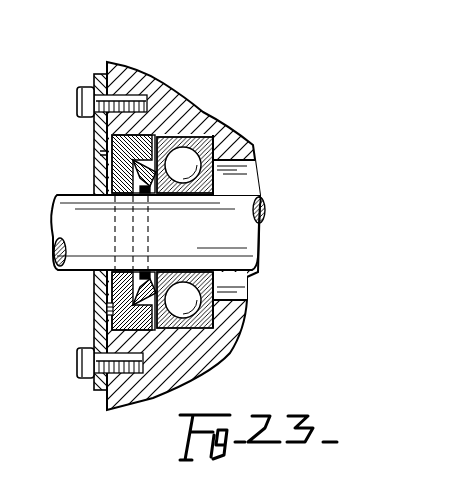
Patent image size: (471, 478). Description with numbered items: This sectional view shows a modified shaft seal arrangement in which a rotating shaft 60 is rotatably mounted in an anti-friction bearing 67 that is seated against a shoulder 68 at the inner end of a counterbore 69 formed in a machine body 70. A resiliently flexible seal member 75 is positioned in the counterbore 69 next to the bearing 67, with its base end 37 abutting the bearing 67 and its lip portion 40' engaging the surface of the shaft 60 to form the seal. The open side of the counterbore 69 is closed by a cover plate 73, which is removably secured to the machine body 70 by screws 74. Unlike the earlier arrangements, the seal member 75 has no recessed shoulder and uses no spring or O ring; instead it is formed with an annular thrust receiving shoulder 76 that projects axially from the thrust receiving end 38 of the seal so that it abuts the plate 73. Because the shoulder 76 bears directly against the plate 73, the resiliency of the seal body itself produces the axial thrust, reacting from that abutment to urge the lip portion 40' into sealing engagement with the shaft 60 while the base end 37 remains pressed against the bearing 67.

The base end 37 is at (142, 158).
The thrust receiving end 38 is at (118, 305).
The tubular ring portion 40' is at (152, 227).
The shaft 60 is at (68, 223).
The anti-friction bearing 67 is at (207, 140).
The shoulder 68 is at (213, 146).
The counterbore 69 is at (150, 328).
The machine body 70 is at (186, 104).
The cover plate 73 is at (92, 288).
The screws 74 is at (77, 362).
The seal member 75 is at (112, 174).
The thrust receiving shoulder 76 is at (107, 138).